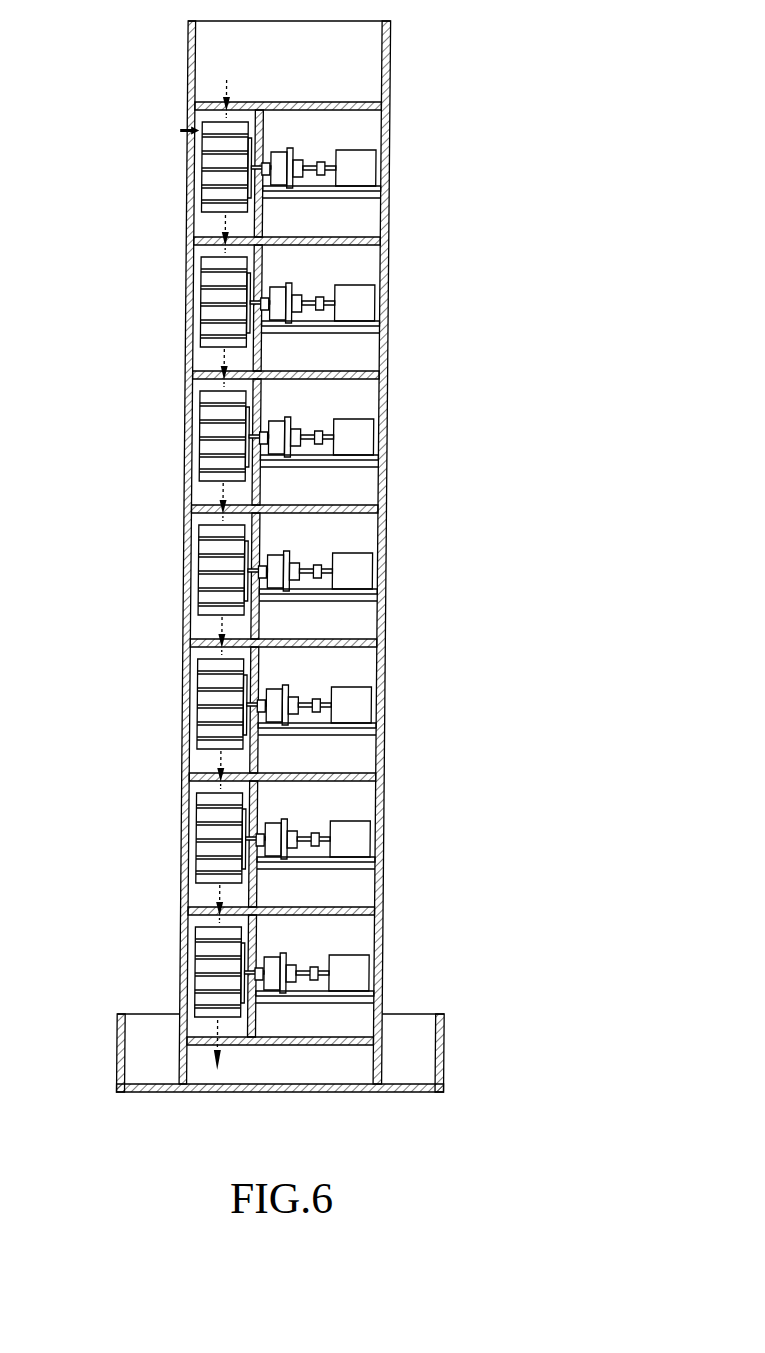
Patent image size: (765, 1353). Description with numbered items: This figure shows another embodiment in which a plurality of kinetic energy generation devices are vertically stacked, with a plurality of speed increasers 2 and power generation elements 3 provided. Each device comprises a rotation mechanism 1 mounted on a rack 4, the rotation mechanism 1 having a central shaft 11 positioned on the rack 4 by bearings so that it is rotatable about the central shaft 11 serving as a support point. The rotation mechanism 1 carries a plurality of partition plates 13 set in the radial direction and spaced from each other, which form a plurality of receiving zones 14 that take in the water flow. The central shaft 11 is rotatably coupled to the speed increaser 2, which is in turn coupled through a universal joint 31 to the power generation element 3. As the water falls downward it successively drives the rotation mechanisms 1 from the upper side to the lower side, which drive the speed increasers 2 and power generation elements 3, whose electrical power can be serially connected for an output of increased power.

The rotation mechanism 1 is at (267, 556).
The speed increaser 2 is at (351, 132).
The power generation element 3 is at (391, 168).
The rack 4 is at (388, 160).
The central shaft 11 is at (350, 243).
The partition plates 13 is at (169, 167).
The receiving zones 14 is at (175, 168).
The universal joint 31 is at (383, 202).